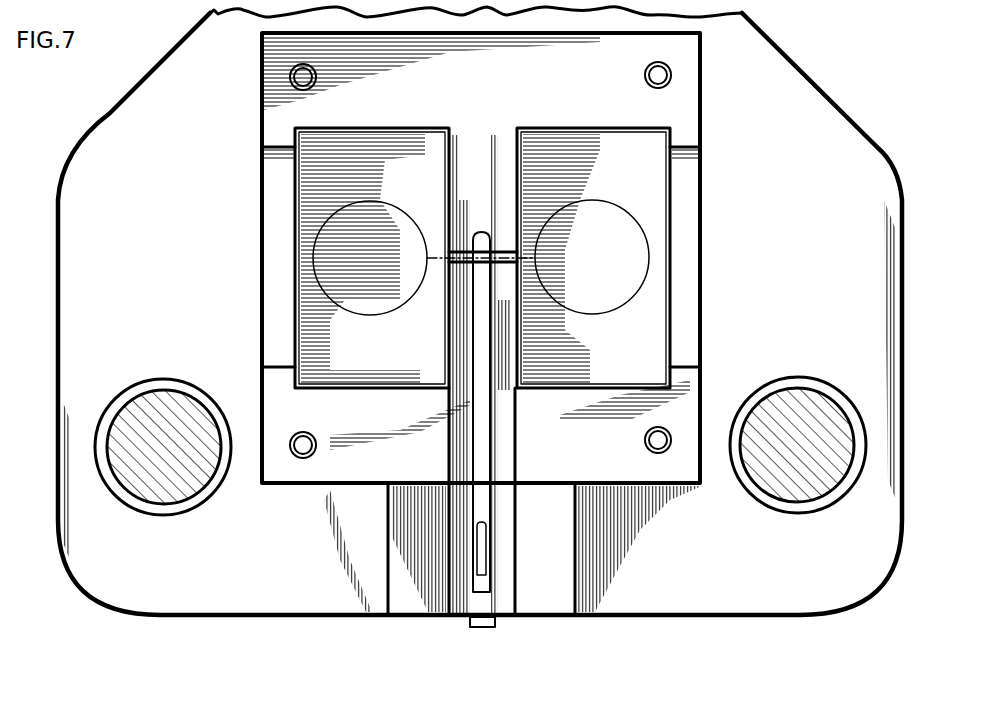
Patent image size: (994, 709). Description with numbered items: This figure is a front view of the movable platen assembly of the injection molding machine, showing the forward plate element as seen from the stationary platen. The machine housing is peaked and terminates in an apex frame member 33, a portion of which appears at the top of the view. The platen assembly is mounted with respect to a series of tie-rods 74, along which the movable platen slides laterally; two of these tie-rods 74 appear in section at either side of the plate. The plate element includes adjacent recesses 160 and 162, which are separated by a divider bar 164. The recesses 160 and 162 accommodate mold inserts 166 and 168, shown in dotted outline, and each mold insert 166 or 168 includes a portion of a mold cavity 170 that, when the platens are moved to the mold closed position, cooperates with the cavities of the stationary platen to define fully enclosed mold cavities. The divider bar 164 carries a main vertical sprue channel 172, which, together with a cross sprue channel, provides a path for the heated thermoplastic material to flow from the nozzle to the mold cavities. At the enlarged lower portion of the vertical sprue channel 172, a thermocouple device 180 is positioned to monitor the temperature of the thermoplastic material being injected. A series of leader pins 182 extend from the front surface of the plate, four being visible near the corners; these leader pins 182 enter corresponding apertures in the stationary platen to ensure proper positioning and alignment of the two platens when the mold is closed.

The apex frame member 33 is at (176, 70).
The tie-rods 74 is at (145, 412).
The recess 160 is at (652, 146).
The recess 162 is at (324, 258).
The divider bar 164 is at (485, 145).
The mold insert 166 is at (657, 215).
The mold insert 168 is at (300, 298).
The mold cavity 170 is at (390, 215).
The main vertical sprue channel 172 is at (446, 412).
The thermocouple device 180 is at (483, 582).
The leader pins 182 is at (316, 80).